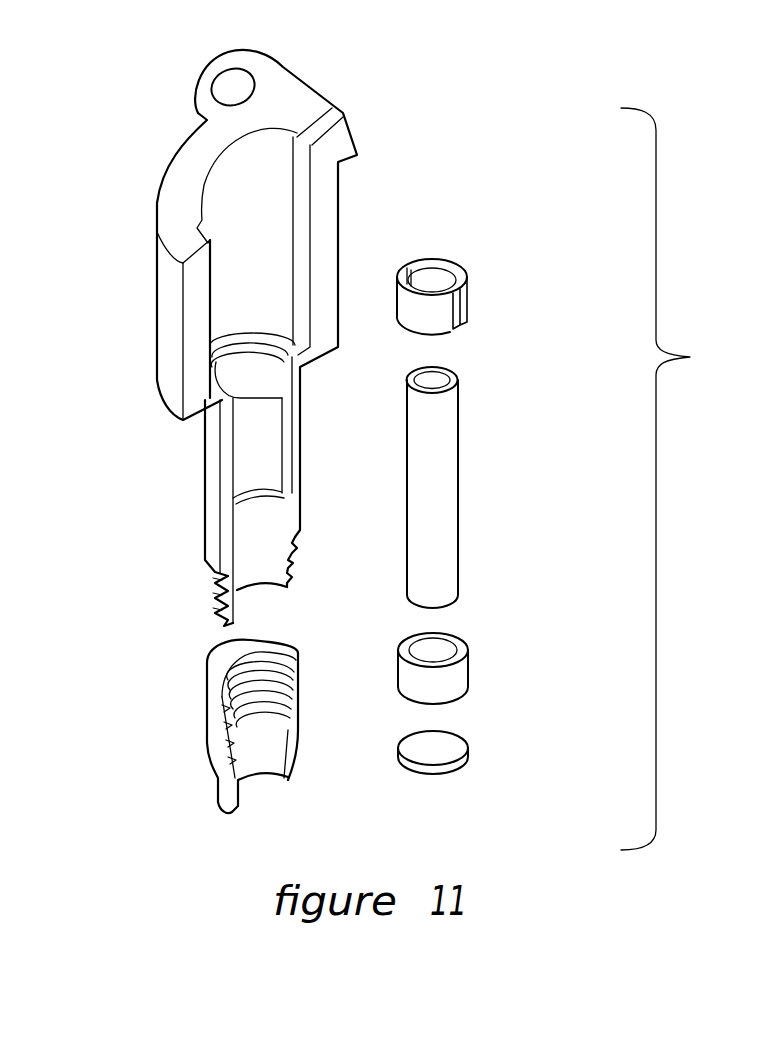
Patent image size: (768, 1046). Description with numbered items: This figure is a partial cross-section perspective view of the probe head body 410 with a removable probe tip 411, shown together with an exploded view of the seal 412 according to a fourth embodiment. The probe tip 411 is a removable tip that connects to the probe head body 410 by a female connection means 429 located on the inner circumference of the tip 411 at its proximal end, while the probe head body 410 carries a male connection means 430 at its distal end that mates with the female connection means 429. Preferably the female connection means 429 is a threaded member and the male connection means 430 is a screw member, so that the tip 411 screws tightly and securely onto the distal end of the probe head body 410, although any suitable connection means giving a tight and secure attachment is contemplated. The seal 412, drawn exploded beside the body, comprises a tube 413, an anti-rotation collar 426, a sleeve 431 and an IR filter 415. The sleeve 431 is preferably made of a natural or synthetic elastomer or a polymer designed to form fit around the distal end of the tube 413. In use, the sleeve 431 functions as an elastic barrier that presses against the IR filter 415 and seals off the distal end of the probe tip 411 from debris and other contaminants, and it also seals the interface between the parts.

The probe head body 410 is at (170, 114).
The probe tip 411 is at (196, 756).
The seal 412 is at (686, 479).
The tube 413 is at (458, 487).
The IR filter 415 is at (468, 749).
The anti-rotation collar 426 is at (468, 293).
The female connection means 429 is at (268, 680).
The male connection means 430 is at (203, 597).
The sleeve 431 is at (468, 664).